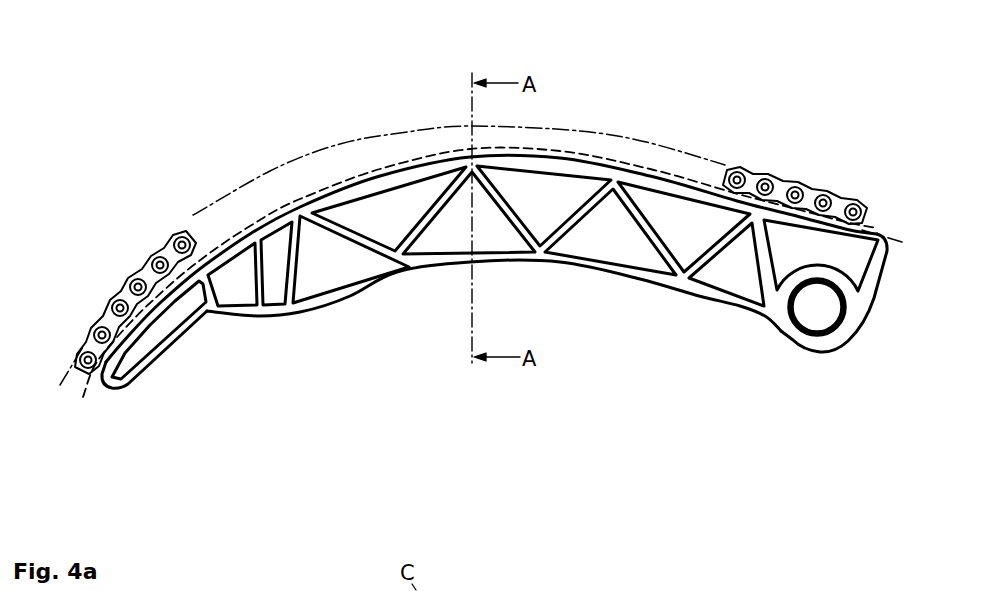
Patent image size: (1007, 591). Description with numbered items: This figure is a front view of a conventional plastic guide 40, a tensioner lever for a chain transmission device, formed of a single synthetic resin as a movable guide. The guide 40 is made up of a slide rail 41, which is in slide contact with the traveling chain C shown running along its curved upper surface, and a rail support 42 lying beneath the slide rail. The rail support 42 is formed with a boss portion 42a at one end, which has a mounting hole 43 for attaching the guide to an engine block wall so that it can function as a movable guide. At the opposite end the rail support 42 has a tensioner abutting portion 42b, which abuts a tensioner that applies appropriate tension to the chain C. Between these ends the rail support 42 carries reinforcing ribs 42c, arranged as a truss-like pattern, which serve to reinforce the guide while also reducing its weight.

The plastic guide 40 is at (485, 254).
The slide rail 41 is at (381, 156).
The rail support 42 is at (485, 254).
The boss portion 42a is at (798, 342).
The tensioner abutting portion 42b is at (267, 318).
The reinforcing ribs 42c is at (642, 222).
The mounting hole 43 is at (815, 306).
The chain C is at (152, 272).